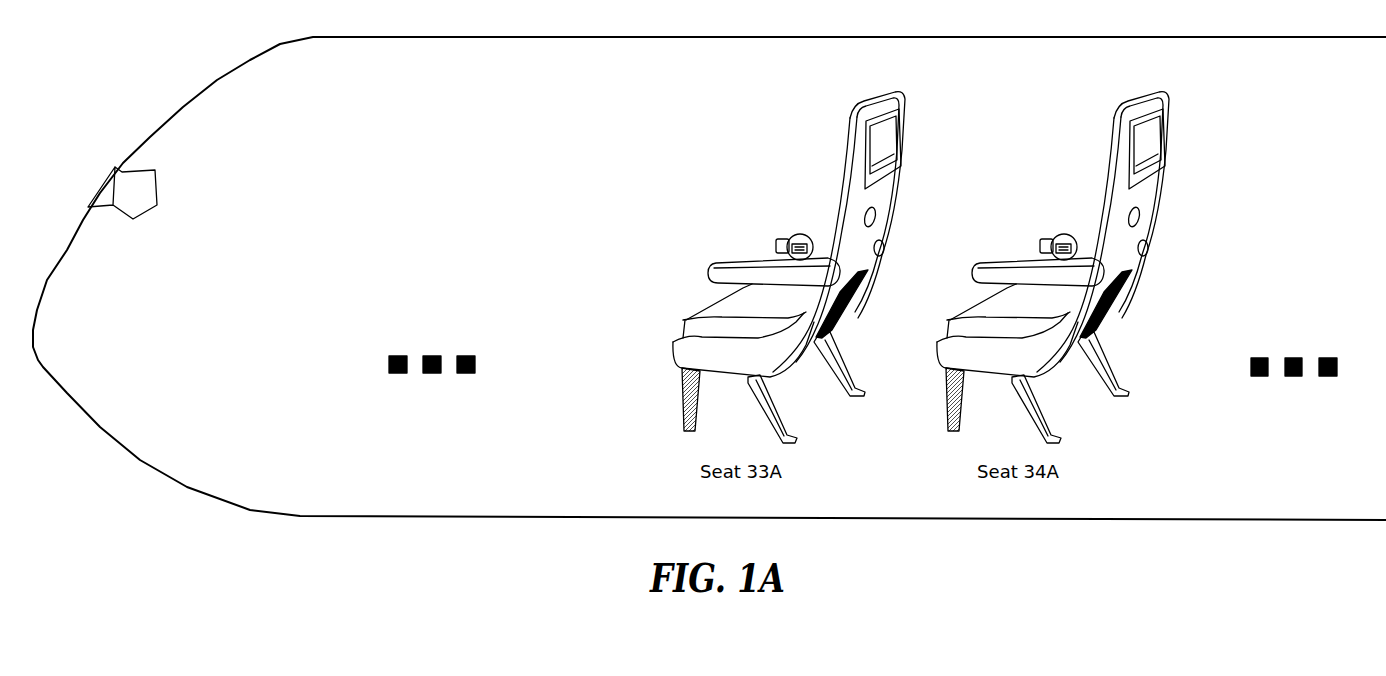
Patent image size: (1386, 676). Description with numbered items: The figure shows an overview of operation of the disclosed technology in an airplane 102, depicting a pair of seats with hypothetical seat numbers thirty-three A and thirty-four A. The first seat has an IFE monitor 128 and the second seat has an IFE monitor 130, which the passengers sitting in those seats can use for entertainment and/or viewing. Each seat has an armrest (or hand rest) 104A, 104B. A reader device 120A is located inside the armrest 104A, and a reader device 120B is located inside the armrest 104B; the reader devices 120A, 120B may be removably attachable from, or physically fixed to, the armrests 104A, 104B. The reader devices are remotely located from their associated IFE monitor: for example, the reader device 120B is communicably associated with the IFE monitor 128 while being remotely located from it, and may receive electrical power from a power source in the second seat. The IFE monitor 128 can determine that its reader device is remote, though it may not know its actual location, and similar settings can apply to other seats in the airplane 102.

The airplane 102 is at (1212, 38).
The armrest 104A is at (779, 245).
The armrest 104B is at (1043, 245).
The reader device 120A is at (798, 238).
The reader device 120B is at (1062, 238).
The IFE monitor 128 is at (907, 129).
The IFE monitor 130 is at (1176, 130).